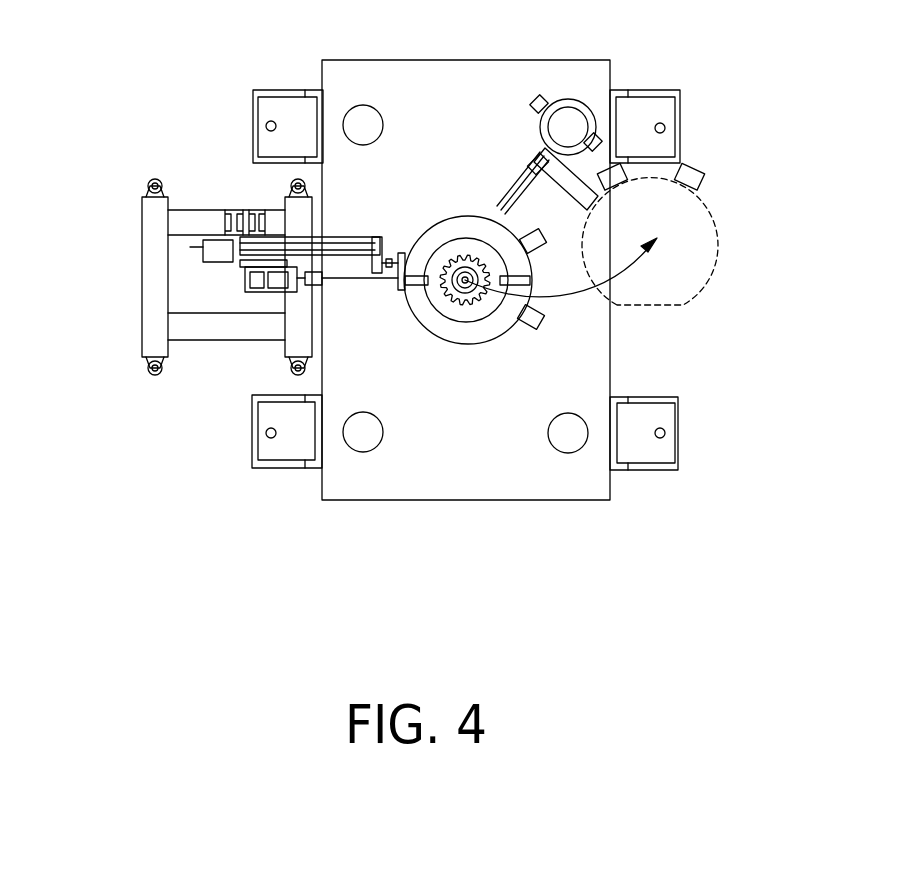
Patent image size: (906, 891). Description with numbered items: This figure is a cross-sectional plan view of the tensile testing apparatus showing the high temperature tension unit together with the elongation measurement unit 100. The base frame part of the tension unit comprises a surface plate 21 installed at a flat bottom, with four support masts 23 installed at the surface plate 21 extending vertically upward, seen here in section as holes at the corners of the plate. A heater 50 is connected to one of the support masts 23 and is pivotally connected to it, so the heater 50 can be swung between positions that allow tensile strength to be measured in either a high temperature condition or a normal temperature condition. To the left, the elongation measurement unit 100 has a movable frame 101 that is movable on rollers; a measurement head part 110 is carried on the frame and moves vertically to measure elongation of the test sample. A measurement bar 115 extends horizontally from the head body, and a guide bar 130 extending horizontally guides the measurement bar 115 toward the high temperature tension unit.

The elongation measurement unit 100 is at (192, 113).
The surface plate 21 is at (508, 475).
The support masts 23 is at (365, 123).
The heater 50 is at (463, 222).
The movable frame 101 is at (222, 330).
The measurement head part 110 is at (245, 280).
The measurement bar 115 is at (347, 280).
The guide bar 130 is at (340, 243).